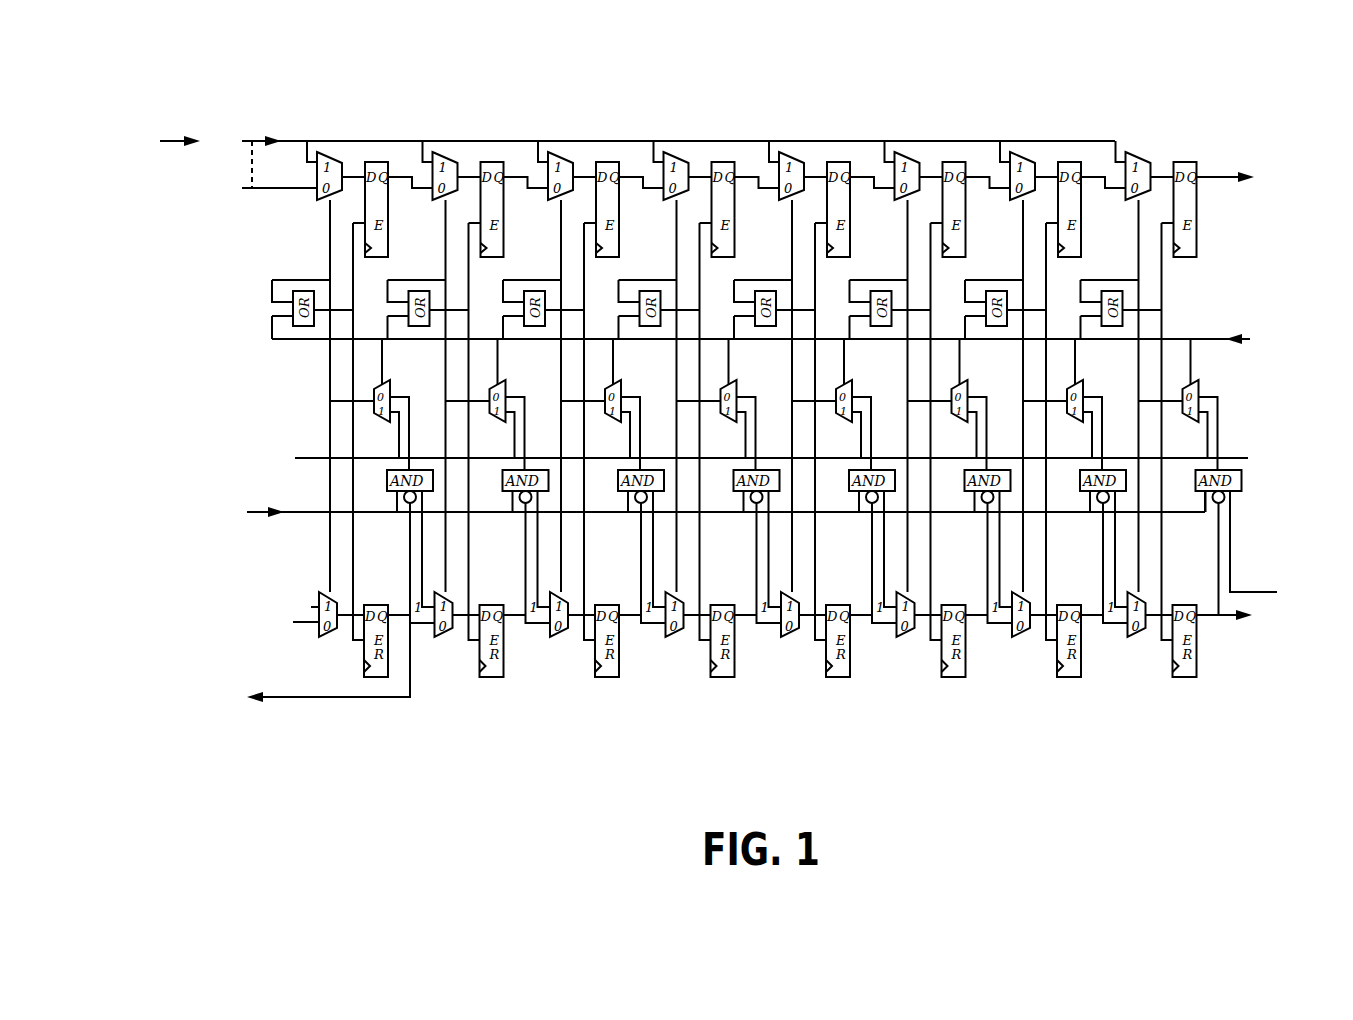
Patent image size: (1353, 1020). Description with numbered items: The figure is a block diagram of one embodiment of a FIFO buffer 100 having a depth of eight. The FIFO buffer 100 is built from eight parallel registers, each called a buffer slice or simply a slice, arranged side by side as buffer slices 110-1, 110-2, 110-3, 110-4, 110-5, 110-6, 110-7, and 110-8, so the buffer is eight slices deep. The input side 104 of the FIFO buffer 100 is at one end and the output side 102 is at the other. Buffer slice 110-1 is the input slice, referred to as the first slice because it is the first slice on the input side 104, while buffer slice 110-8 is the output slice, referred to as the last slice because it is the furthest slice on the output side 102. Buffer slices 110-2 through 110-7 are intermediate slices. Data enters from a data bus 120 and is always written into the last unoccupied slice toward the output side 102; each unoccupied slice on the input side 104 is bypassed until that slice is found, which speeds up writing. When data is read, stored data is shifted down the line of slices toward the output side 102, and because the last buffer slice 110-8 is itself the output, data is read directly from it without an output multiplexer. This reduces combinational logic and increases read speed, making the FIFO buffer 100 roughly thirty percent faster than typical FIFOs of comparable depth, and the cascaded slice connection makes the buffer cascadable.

The FIFO buffer 100 is at (1216, 76).
The output side 102 is at (1282, 266).
The input side 104 is at (206, 390).
The buffer slice 110-1 is at (344, 373).
The buffer slice 110-2 is at (460, 424).
The buffer slice 110-3 is at (575, 424).
The buffer slice 110-4 is at (691, 424).
The buffer slice 110-5 is at (806, 424).
The buffer slice 110-6 is at (922, 424).
The buffer slice 110-7 is at (1037, 424).
The buffer slice 110-8 is at (1153, 424).
The data bus 120 is at (158, 145).